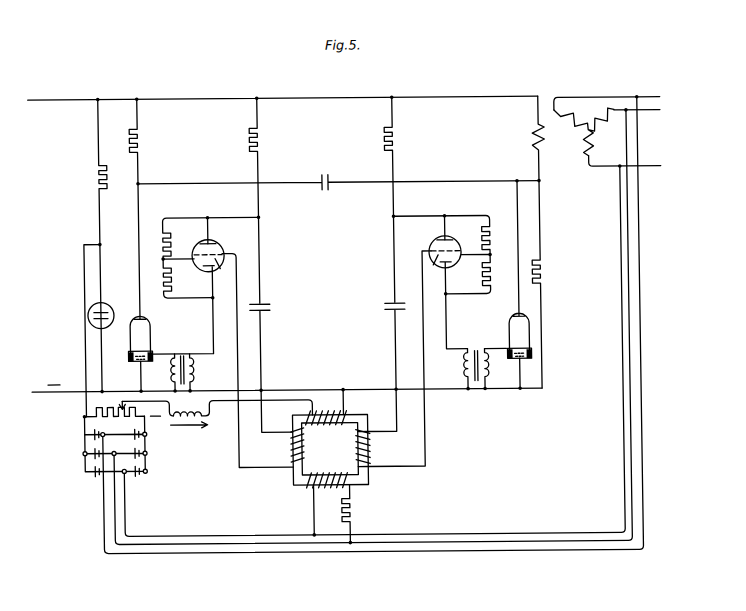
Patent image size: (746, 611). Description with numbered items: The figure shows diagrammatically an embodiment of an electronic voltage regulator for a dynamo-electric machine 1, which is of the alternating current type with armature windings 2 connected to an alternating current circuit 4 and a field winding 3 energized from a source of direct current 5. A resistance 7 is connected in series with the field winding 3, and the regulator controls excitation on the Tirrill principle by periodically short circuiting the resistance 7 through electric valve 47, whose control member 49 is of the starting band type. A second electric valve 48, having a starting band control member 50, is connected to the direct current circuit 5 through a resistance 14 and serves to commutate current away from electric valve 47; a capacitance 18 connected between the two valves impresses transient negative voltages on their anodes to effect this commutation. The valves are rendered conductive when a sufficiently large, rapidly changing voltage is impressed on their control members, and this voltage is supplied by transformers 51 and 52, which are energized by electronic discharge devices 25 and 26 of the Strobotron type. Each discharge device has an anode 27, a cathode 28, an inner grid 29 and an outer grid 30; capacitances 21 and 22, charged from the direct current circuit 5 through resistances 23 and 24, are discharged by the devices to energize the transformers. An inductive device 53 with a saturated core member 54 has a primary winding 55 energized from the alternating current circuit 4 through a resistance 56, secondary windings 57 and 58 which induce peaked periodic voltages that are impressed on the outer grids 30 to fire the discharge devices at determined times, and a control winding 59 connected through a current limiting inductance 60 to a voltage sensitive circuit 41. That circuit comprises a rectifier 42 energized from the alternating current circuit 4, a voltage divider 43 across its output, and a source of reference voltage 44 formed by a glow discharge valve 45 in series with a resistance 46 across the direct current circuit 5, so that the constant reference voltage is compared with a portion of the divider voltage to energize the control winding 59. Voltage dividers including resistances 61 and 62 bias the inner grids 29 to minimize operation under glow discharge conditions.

The dynamo-electric machine 1 is at (596, 125).
The armature windings 2 is at (561, 152).
The field winding 3 is at (532, 137).
The alternating current circuit 4 is at (660, 160).
The source of direct current 5 is at (64, 389).
The resistance 7 is at (548, 270).
The resistance 14 is at (142, 139).
The capacitance 18 is at (330, 170).
The capacitance 21 is at (382, 304).
The capacitance 22 is at (278, 297).
The resistance 23 is at (398, 137).
The resistance 24 is at (263, 139).
The electronic discharge device 25 is at (456, 247).
The electronic discharge device 26 is at (222, 246).
The anode 27 is at (440, 244).
The cathode 28 is at (452, 268).
The inner grid 29 is at (436, 270).
The outer grid 30 is at (461, 253).
The voltage sensitive circuit 41 is at (110, 411).
The rectifier 42 is at (126, 449).
The voltage divider 43 is at (94, 417).
The source of reference voltage 44 is at (92, 388).
The glow discharge valve 45 is at (111, 304).
The resistance 46 is at (93, 177).
The electric valve 47 is at (506, 316).
The electric valve 48 is at (151, 326).
The control member 49 is at (505, 350).
The control member 50 is at (152, 350).
The transformer 51 is at (474, 353).
The transformer 52 is at (183, 345).
The inductive device 53 is at (334, 457).
The saturated core member 54 is at (355, 416).
The primary winding 55 is at (315, 492).
The resistance 56 is at (352, 508).
The secondary winding 57 is at (371, 450).
The secondary winding 58 is at (286, 449).
The control winding 59 is at (338, 413).
The current limiting inductance 60 is at (206, 425).
The resistance 61 is at (498, 280).
The resistance 62 is at (163, 288).